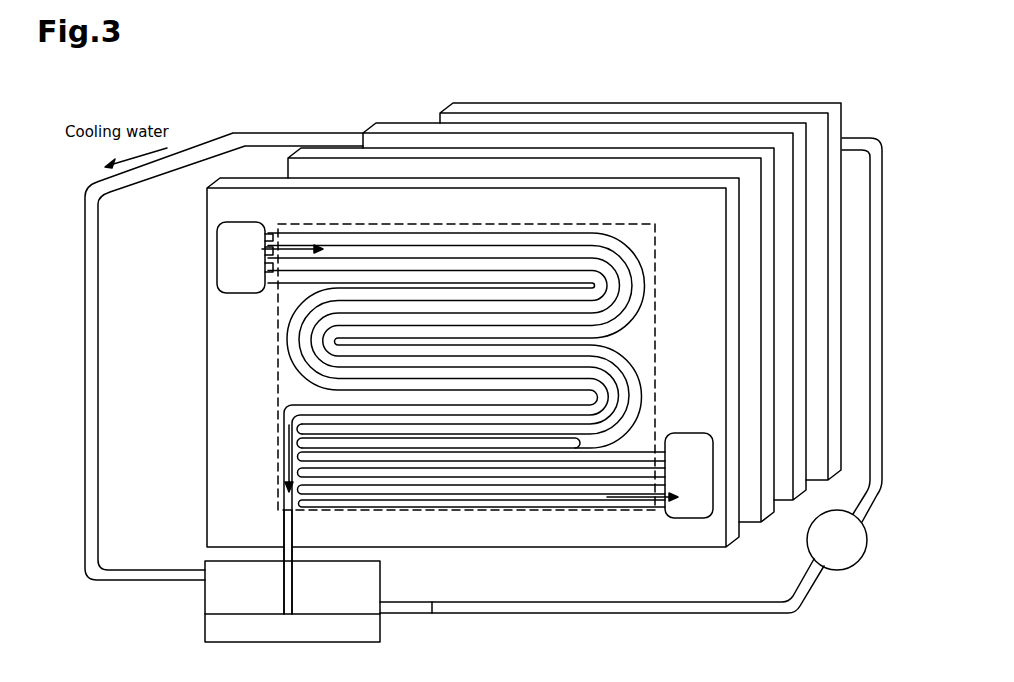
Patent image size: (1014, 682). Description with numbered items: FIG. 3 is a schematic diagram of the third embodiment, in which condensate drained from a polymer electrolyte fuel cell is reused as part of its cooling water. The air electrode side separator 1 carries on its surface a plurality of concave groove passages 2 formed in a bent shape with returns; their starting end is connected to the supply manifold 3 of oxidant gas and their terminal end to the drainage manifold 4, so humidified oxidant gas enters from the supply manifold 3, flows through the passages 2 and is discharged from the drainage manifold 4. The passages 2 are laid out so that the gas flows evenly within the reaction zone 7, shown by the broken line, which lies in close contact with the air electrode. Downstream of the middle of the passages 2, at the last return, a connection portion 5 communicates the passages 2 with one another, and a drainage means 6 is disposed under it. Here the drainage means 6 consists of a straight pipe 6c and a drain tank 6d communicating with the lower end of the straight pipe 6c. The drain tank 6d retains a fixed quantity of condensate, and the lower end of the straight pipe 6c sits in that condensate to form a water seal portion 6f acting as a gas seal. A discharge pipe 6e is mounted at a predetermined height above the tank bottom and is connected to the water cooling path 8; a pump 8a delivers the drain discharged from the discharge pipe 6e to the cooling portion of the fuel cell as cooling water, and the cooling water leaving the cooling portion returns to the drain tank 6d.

The air electrode side separator 1 is at (207, 208).
The passage 2 is at (417, 258).
The supply manifold 3 is at (230, 262).
The drainage manifold 4 is at (692, 520).
The connection portion 5 is at (283, 416).
The drainage means 6 is at (277, 519).
The straight pipe 6c is at (293, 582).
The drain tank 6d is at (205, 600).
The discharge pipe 6e is at (411, 614).
The water seal portion 6f is at (275, 633).
The reaction zone 7 is at (279, 333).
The water cooling path 8 is at (887, 161).
The pump 8a is at (853, 563).